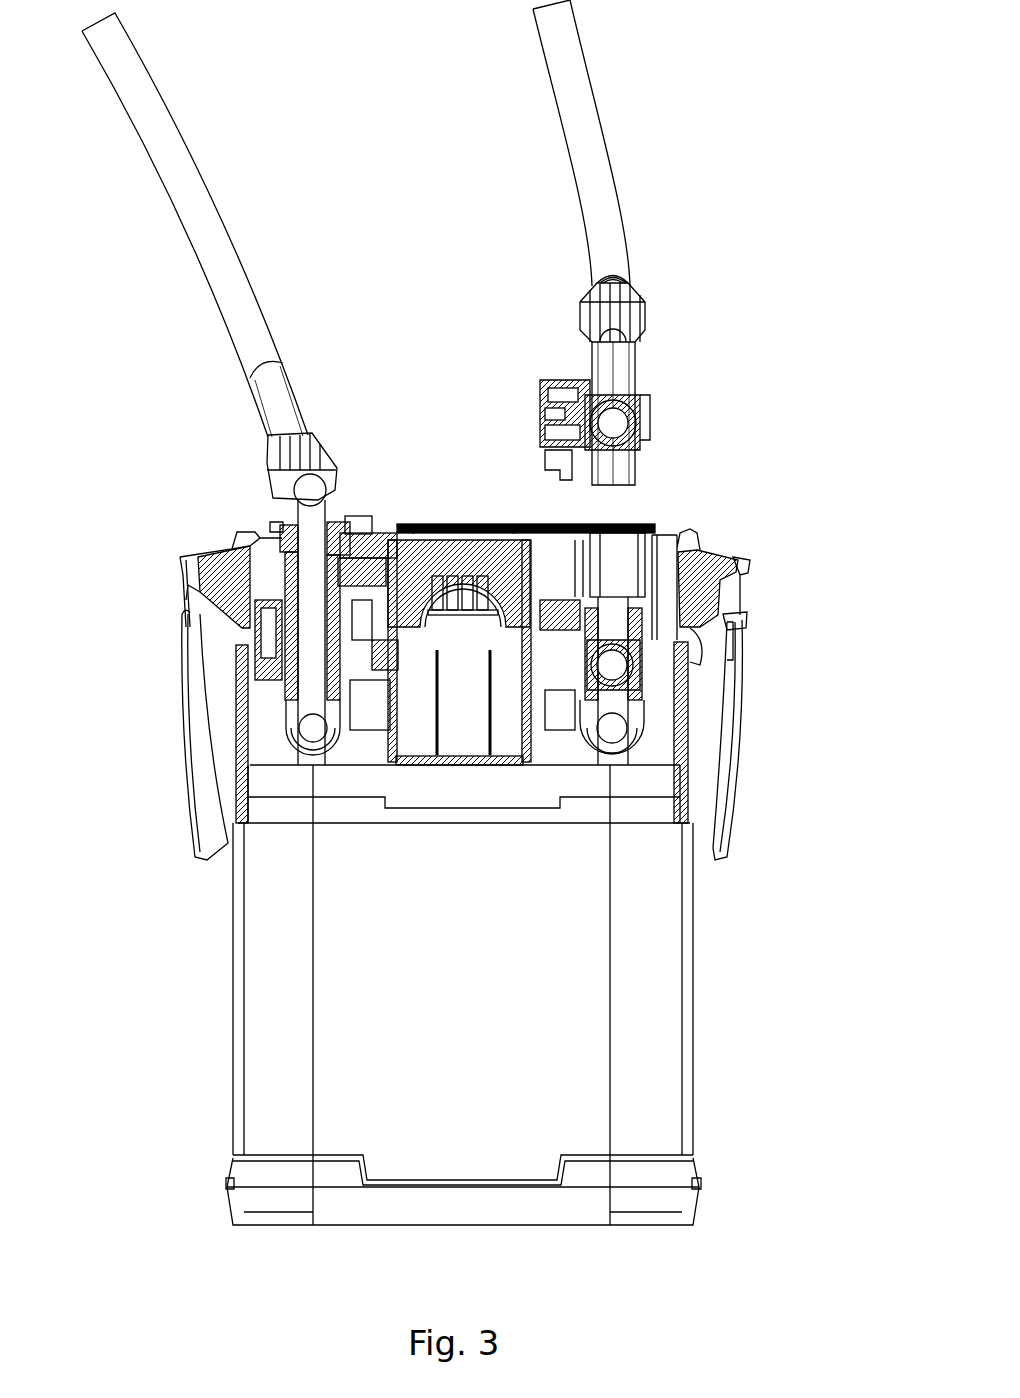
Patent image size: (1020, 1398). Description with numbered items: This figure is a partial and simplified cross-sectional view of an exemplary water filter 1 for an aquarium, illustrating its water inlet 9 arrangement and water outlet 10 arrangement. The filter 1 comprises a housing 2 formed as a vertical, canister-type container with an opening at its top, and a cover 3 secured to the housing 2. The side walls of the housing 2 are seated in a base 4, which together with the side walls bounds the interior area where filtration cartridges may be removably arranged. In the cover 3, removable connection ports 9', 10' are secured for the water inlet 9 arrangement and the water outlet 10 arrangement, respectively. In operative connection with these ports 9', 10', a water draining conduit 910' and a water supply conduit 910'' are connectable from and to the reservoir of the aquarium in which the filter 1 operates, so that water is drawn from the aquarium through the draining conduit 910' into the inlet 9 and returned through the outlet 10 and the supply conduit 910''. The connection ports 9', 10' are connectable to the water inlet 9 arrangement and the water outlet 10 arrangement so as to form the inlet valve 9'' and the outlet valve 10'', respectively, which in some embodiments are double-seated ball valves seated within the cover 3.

The water filter 1 is at (185, 1110).
The housing 2 is at (645, 953).
The cover 3 is at (697, 533).
The base 4 is at (663, 1198).
The water inlet 9 is at (679, 553).
The connection port 9' is at (671, 268).
The inlet valve 9'' is at (708, 631).
The water outlet 10 is at (198, 601).
The connection port 10' is at (209, 434).
The outlet valve 10'' is at (201, 633).
The water draining conduit 910' is at (654, 143).
The water supply conduit 910'' is at (200, 218).